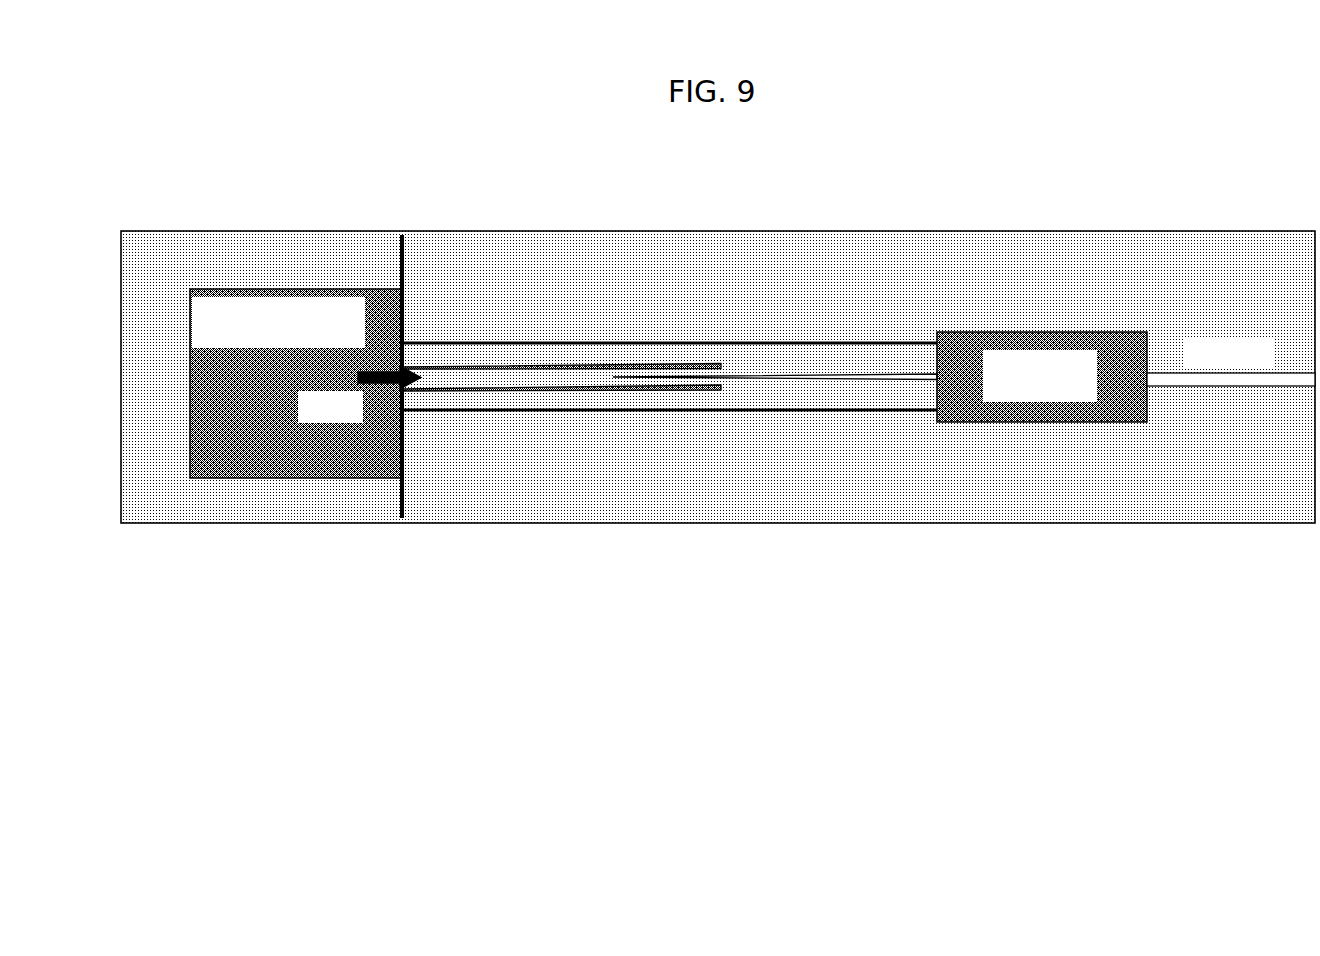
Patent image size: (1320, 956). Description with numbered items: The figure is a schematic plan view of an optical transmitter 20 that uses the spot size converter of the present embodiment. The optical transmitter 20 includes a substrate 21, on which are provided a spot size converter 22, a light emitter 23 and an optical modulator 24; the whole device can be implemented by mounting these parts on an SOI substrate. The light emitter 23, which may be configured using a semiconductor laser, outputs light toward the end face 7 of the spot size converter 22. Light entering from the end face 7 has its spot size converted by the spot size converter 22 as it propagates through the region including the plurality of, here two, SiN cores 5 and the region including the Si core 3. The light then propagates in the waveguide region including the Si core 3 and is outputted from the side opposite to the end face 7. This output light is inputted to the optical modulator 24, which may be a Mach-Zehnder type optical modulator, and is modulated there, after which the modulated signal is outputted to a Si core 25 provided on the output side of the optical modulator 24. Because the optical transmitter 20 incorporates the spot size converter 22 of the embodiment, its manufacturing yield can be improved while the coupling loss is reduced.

The optical transmitter 20 is at (900, 226).
The substrate 21 is at (222, 252).
The light emitter 23 is at (268, 476).
The end face 7 is at (398, 356).
The spot size converter 22 is at (544, 337).
The SiN cores 5 is at (513, 364).
The Si core 3 is at (819, 380).
The optical modulator 24 is at (1060, 330).
The Si core 25 is at (1225, 380).